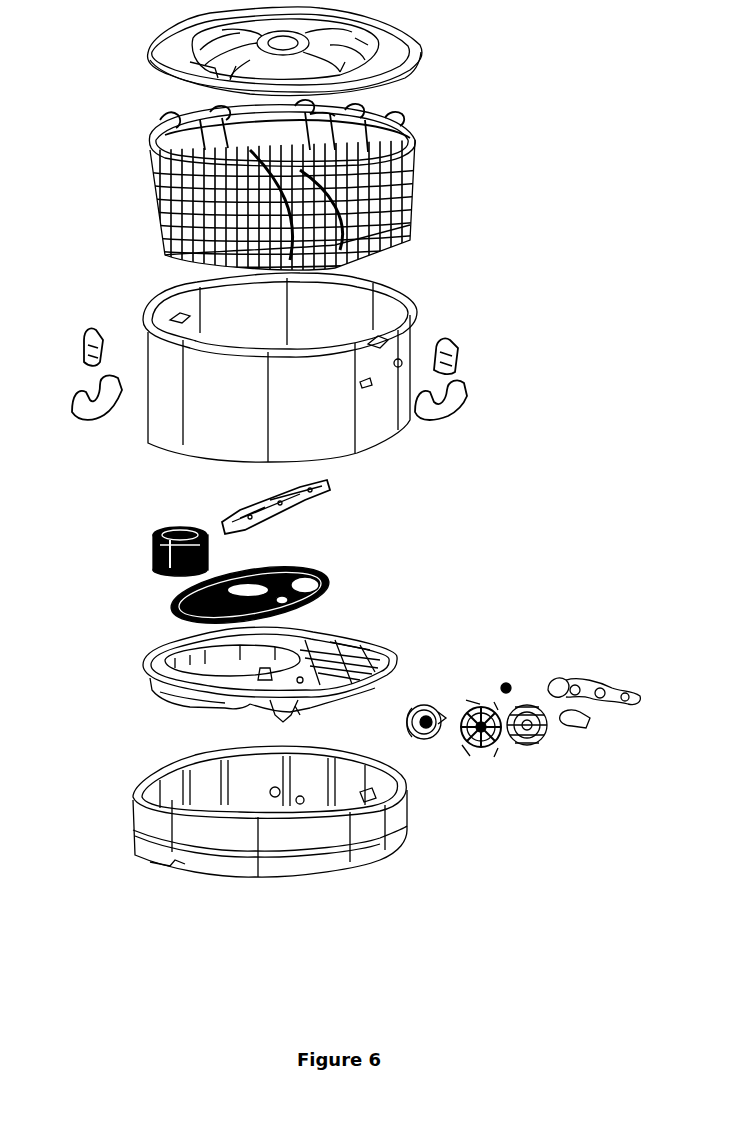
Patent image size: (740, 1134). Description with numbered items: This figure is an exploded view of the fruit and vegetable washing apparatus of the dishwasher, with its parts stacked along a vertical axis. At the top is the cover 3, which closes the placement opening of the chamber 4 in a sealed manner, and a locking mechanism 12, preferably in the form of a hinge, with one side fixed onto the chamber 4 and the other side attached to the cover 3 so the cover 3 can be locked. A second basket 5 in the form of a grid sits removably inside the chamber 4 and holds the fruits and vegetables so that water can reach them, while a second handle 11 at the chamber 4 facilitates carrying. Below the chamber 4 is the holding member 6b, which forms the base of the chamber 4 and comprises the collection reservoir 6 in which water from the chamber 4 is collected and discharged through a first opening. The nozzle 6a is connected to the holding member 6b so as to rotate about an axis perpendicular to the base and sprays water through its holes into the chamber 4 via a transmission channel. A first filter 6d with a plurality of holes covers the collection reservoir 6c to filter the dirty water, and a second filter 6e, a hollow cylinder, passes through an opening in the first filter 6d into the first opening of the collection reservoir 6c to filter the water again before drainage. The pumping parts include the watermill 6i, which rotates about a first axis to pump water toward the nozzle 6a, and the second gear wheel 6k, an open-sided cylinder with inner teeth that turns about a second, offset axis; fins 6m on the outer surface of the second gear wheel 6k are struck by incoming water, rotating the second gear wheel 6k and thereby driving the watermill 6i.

The cover 3 is at (407, 33).
The second basket 5 is at (407, 185).
The chamber 4 is at (153, 307).
The locking mechanism 12 is at (453, 340).
The second handle 11 is at (460, 403).
The nozzle 6a is at (323, 495).
The second filter 6e is at (153, 550).
The first filter 6d is at (173, 603).
The holding member 6b is at (372, 638).
The collection reservoir 6c is at (167, 695).
The collection reservoir 6 is at (133, 815).
The watermill 6i is at (423, 740).
The second gear wheel 6k is at (488, 750).
The fins 6m is at (535, 745).